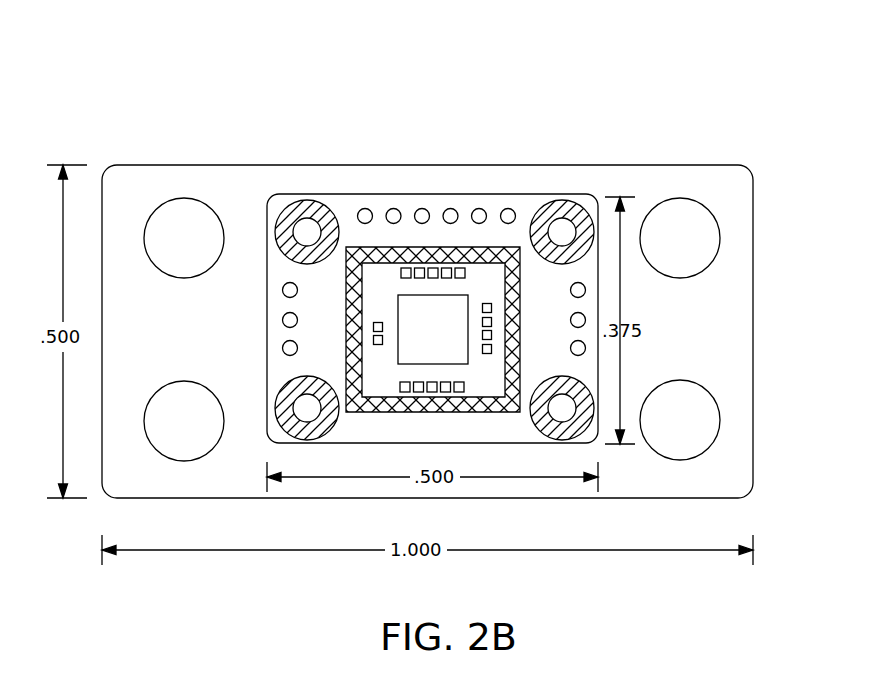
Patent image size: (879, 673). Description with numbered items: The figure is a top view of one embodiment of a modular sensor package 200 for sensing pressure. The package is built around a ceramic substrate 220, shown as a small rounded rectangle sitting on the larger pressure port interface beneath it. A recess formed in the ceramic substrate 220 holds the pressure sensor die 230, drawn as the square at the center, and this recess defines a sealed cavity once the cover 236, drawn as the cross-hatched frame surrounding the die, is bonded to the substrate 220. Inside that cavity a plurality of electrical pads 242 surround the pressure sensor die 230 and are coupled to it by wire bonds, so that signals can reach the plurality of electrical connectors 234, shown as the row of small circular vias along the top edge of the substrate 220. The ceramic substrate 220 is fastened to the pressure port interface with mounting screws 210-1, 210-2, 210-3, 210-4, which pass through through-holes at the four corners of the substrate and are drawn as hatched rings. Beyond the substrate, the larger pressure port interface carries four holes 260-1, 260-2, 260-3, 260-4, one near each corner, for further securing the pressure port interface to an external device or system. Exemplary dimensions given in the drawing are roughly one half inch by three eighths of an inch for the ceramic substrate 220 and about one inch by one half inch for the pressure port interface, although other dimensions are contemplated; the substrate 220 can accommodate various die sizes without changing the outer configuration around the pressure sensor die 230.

The modular sensor package 200 is at (180, 90).
The hole 260-1 is at (186, 461).
The hole 260-2 is at (720, 422).
The hole 260-3 is at (720, 238).
The hole 260-4 is at (168, 200).
The mounting screw 210-1 is at (285, 427).
The mounting screw 210-2 is at (548, 448).
The mounting standoff 210-3 is at (552, 205).
The mounting standoff 210-4 is at (290, 200).
The ceramic substrate 220 is at (265, 356).
The electrical connectors 234 is at (422, 203).
The cover 236 is at (525, 360).
The pressure sensor die 230 is at (448, 336).
The electrical pads 242 is at (393, 386).